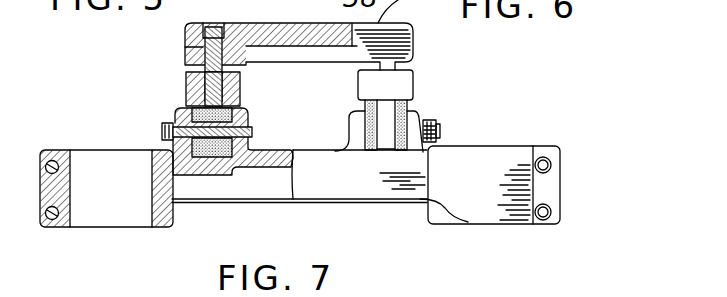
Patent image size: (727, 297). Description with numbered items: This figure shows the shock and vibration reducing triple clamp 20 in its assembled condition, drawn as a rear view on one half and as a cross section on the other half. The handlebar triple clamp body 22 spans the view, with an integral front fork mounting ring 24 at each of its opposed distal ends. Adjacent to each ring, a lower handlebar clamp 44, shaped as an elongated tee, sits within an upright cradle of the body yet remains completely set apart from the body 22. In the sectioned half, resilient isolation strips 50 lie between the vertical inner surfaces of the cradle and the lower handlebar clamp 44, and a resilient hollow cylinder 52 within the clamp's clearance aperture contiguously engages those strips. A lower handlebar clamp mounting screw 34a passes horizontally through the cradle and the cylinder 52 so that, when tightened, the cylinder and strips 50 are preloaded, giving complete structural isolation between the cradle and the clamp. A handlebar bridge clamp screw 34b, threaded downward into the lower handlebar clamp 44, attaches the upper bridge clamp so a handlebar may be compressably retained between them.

The shock and vibration reducing triple clamp 20 is at (580, 178).
The handlebar triple clamp body 22 is at (402, 207).
The front fork mounting ring 24 is at (97, 228).
The lower handlebar clamp mounting screw 34a is at (160, 128).
The handlebar bridge clamp screw 34b is at (185, 51).
The lower handlebar clamp 44 is at (185, 88).
The resilient isolation strip 50 is at (370, 152).
The resilient hollow cylinder 52 is at (209, 140).